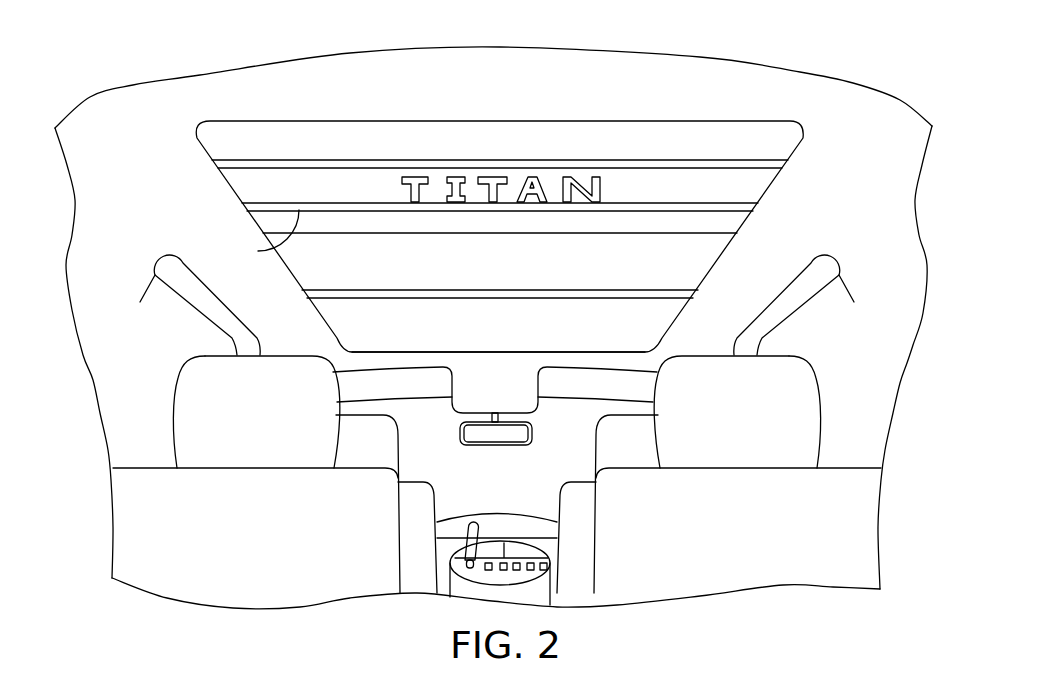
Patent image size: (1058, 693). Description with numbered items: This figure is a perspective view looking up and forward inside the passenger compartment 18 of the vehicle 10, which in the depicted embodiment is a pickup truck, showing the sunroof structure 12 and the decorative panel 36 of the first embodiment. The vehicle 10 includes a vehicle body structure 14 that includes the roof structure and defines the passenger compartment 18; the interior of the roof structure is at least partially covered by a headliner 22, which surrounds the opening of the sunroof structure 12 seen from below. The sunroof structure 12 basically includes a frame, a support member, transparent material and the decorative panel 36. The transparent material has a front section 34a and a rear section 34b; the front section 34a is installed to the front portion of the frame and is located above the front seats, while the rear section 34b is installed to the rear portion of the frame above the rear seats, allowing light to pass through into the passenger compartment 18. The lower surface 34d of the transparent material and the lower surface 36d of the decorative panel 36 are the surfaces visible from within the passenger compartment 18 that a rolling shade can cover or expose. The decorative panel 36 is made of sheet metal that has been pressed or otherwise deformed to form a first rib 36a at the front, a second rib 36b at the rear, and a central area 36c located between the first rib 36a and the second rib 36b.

The vehicle 10 is at (803, 31).
The sunroof structure 12 is at (740, 258).
The vehicle body structure 14 is at (857, 80).
The passenger compartment 18 is at (148, 124).
The headliner 22 is at (680, 93).
The front section 34a is at (623, 318).
The rear section 34b is at (667, 263).
The lower surface 34d is at (332, 255).
The decorative panel 36 is at (210, 194).
The first rib 36a is at (743, 207).
The second rib 36b is at (772, 163).
The central area 36c is at (728, 182).
The lower surface 36d is at (257, 250).